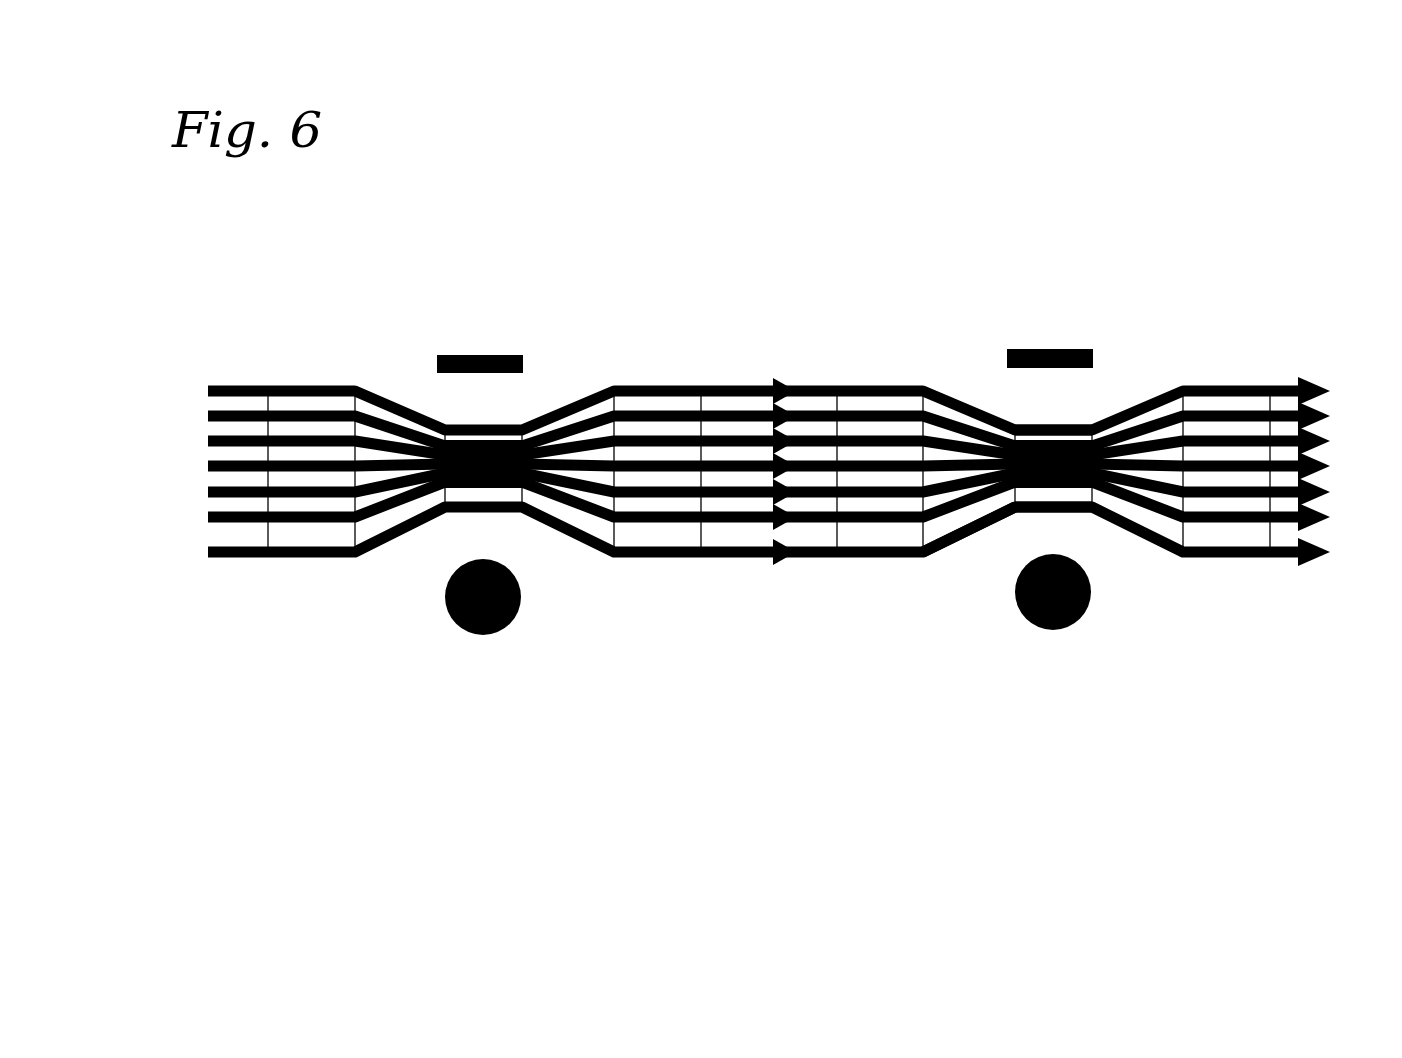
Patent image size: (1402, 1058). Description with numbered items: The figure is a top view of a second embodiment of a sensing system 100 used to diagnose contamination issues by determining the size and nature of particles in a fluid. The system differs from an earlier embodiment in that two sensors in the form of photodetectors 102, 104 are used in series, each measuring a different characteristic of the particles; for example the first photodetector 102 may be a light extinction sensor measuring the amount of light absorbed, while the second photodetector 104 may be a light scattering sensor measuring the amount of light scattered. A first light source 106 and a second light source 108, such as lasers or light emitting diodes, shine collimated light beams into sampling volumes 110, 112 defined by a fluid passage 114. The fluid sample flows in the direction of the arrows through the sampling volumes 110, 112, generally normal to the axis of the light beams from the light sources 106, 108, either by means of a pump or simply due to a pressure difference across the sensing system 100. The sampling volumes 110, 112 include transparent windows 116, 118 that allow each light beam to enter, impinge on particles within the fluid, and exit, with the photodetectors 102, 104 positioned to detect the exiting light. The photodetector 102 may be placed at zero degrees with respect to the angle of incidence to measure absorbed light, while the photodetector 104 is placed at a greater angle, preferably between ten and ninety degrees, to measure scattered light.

The sensing system 100 is at (583, 733).
The first photodetector 102 is at (485, 355).
The second photodetector 104 is at (1052, 348).
The first light source 106 is at (463, 632).
The second light source 108 is at (1068, 628).
The first sampling volume 110 is at (503, 495).
The second sampling volume 112 is at (1073, 493).
The fluid passage 114 is at (930, 557).
The transparent window 116 is at (1038, 503).
The transparent window 118 is at (1038, 423).